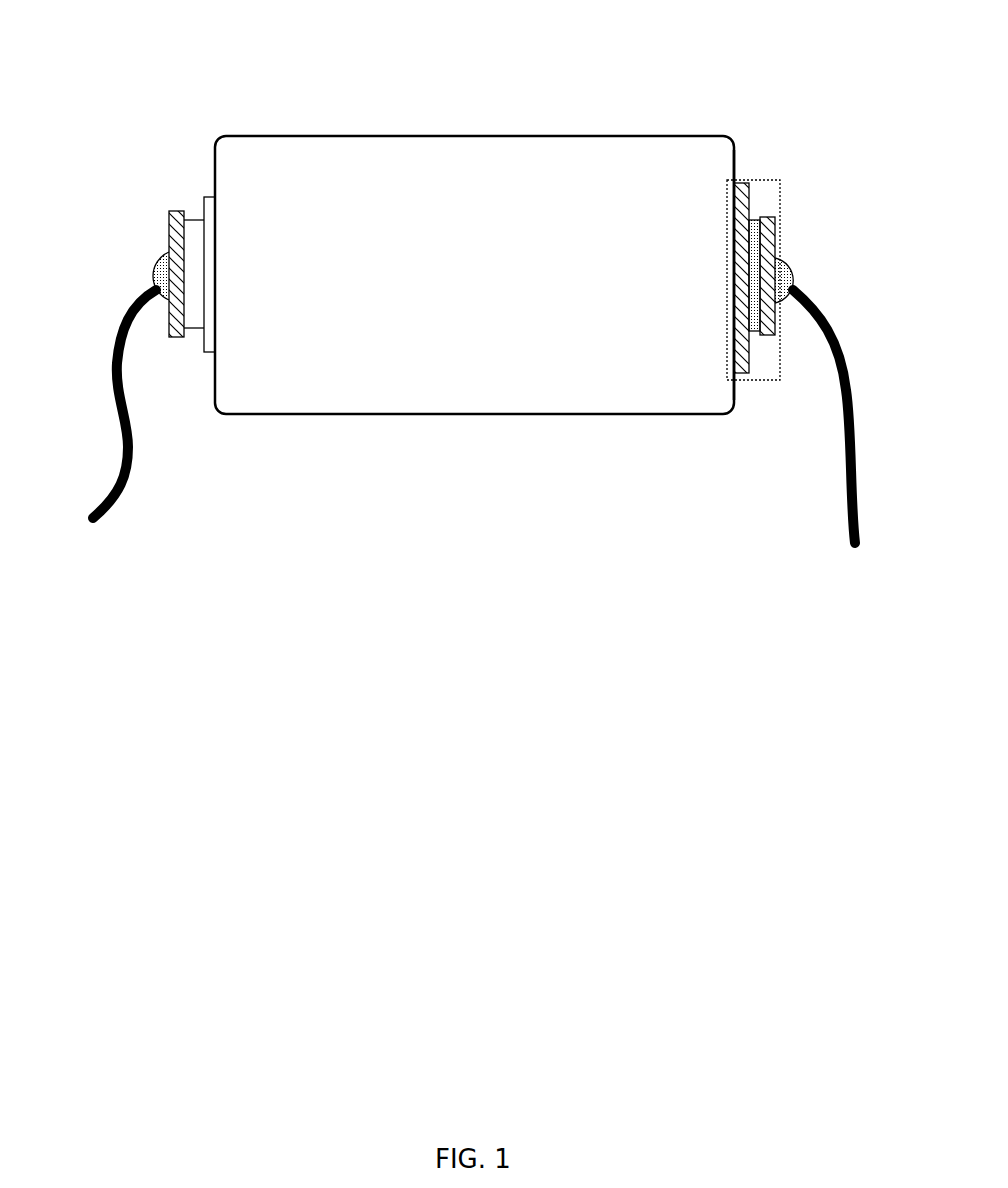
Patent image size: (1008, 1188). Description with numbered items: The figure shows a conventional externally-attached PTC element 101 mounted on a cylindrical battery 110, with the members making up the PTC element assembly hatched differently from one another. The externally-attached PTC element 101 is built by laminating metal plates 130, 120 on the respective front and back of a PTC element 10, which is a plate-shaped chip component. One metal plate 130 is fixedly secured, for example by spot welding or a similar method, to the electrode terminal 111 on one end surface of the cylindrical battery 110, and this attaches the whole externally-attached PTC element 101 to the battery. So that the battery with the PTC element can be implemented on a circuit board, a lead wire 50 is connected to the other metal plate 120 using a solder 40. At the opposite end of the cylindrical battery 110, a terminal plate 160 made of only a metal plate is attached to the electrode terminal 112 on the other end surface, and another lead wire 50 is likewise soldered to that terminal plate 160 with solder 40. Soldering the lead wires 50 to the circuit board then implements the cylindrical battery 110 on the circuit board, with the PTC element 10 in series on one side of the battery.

The cylindrical battery 110 is at (472, 124).
The electrode terminal 111 is at (735, 167).
The electrode terminal 112 is at (193, 238).
The terminal plate 160 is at (168, 222).
The externally-attached PTC element 101 is at (781, 218).
The metal plate 130 is at (738, 352).
The PTC element 10 is at (756, 336).
The metal plate 120 is at (768, 338).
The solder 40 is at (154, 268).
The lead wire 50 is at (108, 518).